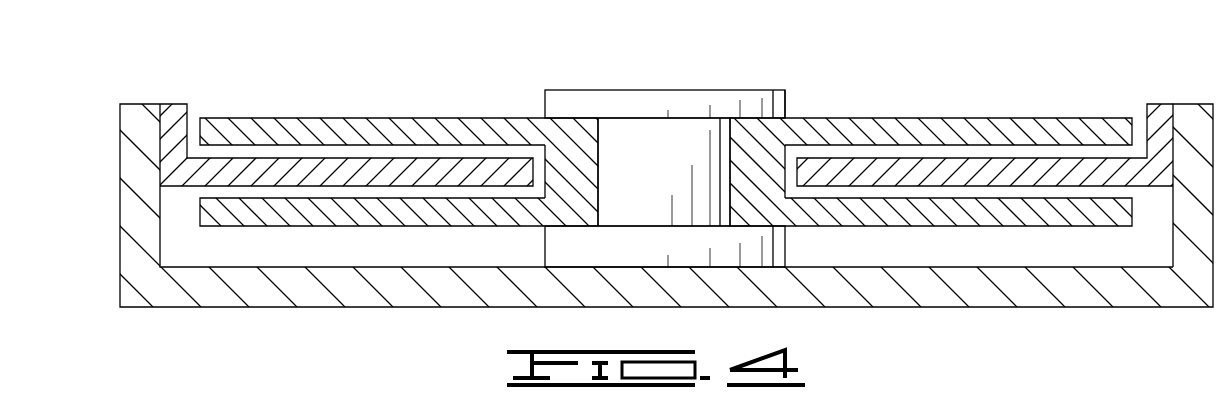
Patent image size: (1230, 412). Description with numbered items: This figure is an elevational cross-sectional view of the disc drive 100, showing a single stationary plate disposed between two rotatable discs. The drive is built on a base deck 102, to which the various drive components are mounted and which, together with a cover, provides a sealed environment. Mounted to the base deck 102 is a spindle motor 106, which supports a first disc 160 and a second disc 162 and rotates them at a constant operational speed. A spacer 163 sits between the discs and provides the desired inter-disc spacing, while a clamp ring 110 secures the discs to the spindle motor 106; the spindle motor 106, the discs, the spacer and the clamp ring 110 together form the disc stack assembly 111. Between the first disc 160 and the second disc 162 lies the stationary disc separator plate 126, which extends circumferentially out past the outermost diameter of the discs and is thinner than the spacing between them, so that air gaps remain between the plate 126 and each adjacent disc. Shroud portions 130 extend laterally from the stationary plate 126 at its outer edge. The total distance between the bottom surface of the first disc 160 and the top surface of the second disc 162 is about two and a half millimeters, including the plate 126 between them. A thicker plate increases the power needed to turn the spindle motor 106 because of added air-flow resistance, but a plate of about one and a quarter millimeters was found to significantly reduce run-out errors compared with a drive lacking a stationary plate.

The disc drive 100 is at (615, 169).
The base deck 102 is at (137, 127).
The spindle motor 106 is at (650, 135).
The clamp ring 110 is at (620, 90).
The disc stack assembly 111 is at (797, 76).
The stationary disc separator plate 126 is at (913, 155).
The shroud portions 130 is at (1158, 112).
The first disc 160 is at (310, 117).
The second disc 162 is at (313, 215).
The spacer 163 is at (562, 160).